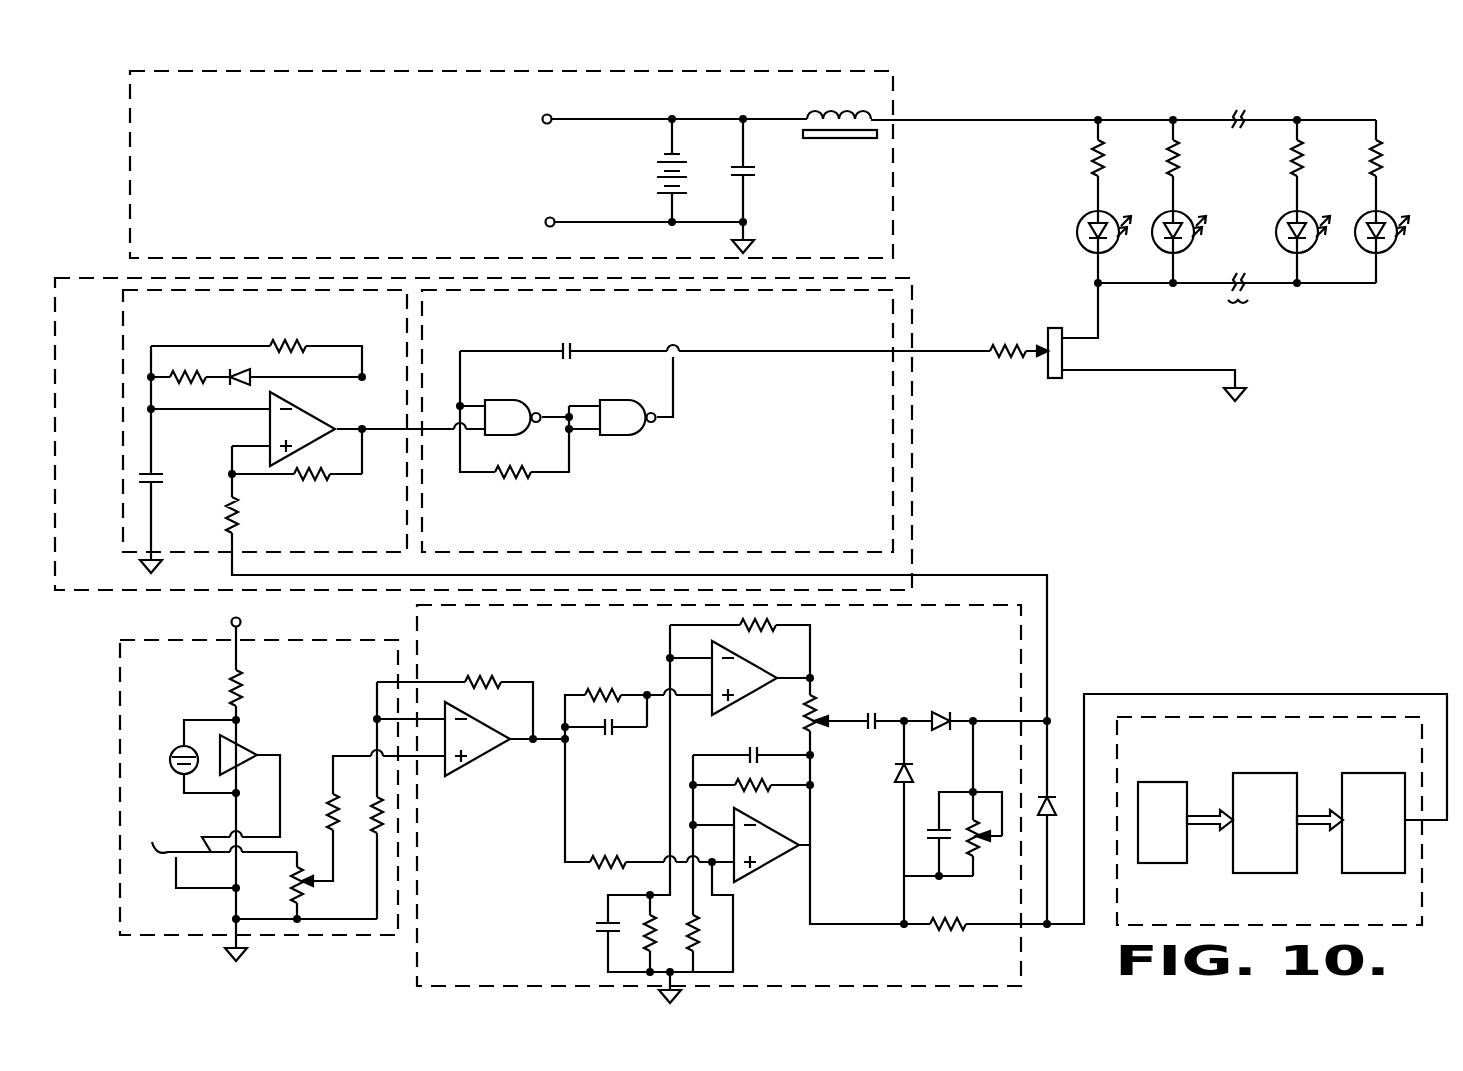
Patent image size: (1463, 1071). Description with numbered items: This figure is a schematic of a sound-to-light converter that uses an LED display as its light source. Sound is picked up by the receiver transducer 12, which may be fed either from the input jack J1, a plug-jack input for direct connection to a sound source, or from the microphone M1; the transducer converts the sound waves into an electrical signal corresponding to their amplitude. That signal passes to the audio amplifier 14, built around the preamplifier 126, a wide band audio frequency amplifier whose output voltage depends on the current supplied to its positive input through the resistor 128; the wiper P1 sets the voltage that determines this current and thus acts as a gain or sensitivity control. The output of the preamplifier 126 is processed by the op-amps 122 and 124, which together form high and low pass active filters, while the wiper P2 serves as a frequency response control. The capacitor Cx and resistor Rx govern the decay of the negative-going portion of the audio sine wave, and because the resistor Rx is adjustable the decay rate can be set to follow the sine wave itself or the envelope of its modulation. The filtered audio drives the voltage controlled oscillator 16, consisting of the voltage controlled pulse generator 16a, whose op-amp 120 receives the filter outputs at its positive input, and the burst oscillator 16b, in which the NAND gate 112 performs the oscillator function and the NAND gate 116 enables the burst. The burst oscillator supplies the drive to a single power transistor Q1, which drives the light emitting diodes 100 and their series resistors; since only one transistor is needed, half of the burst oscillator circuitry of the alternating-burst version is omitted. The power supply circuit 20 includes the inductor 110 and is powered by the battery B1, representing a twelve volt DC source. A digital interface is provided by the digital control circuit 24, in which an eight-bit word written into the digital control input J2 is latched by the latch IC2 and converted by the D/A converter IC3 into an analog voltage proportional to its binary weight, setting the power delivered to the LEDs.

The power supply circuit 20 is at (130, 119).
The inductor 110 is at (816, 114).
The battery B1 is at (688, 167).
The light emitting diodes 100 is at (1083, 217).
The power transistor Q1 is at (962, 342).
The voltage controlled oscillator 16 is at (912, 288).
The voltage controlled pulse generator 16a is at (123, 320).
The burst oscillator 16b is at (898, 322).
The op-amp 120 is at (313, 399).
The NAND gate 116 is at (506, 400).
The NAND gate 112 is at (633, 435).
The receiver transducer 12 is at (120, 668).
The microphone M1 is at (171, 754).
The resistor 128 is at (332, 805).
The input jack J1 is at (168, 858).
The wiper P1 is at (303, 891).
The audio amplifier 14 is at (978, 607).
The preamplifier 126 is at (475, 759).
The amplifier and active filter op-amp 122 is at (754, 650).
The amplifier and active filter op-amp 124 is at (757, 870).
The wiper P2 is at (819, 708).
The capacitor Cx is at (941, 834).
The resistor Rx is at (955, 799).
The digital control circuit 24 is at (1391, 927).
The digital control input J2 is at (1162, 822).
The latch IC2 is at (1281, 873).
The D/A converter IC3 is at (1391, 873).